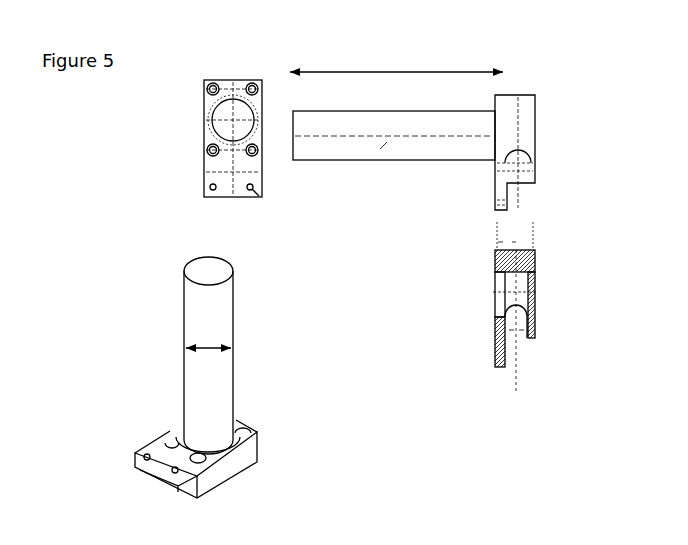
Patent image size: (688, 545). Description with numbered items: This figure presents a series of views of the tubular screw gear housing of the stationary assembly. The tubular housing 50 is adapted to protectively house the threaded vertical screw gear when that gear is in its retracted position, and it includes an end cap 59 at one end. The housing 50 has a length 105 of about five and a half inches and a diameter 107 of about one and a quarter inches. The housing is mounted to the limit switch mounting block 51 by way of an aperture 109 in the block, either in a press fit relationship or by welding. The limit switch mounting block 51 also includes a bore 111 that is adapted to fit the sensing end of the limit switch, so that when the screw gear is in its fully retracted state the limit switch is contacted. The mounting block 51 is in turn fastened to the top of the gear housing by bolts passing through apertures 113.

The tubular housing 50 is at (406, 176).
The limit switch mounting block 51 is at (259, 458).
The end cap 59 is at (205, 267).
The length 105 is at (426, 59).
The diameter 107 is at (209, 337).
The aperture 109 is at (203, 124).
The bore 111 is at (515, 333).
The apertures 113 is at (171, 437).